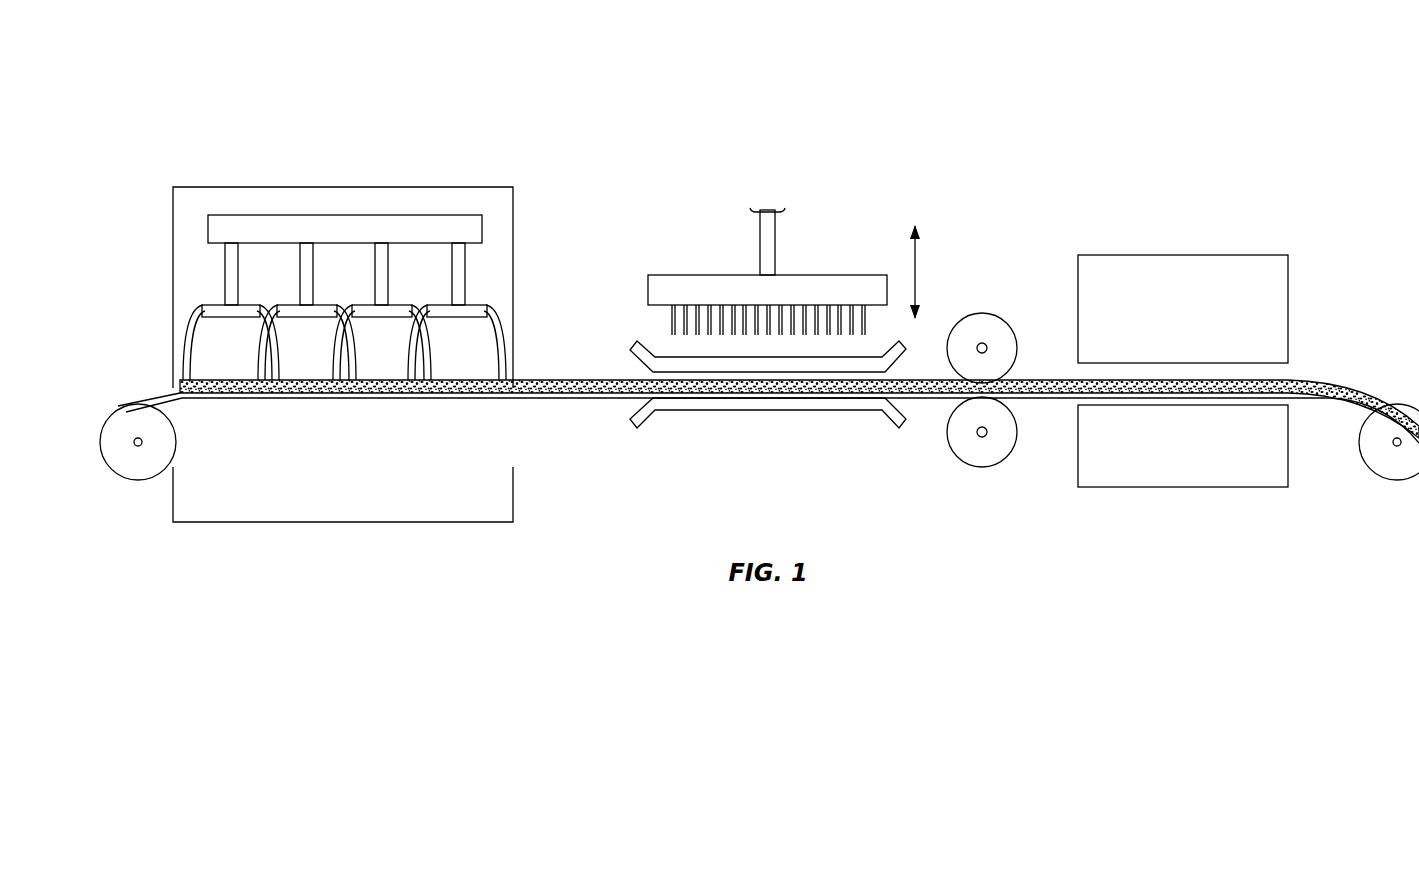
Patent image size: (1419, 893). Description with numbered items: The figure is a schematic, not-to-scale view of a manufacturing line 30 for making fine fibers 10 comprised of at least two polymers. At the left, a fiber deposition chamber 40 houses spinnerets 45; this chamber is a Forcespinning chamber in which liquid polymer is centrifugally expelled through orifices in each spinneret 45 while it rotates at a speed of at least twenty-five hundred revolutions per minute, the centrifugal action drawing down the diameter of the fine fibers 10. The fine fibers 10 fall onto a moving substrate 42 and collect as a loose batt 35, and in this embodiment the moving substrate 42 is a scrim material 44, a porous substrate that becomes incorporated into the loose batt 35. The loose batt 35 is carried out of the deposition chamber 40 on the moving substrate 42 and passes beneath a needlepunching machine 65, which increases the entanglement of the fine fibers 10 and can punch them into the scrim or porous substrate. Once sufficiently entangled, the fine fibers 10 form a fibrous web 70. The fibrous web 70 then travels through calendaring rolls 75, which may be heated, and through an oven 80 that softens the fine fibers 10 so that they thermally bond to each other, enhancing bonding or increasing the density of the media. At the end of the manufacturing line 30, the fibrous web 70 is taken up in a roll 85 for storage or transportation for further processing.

The manufacturing line 30 is at (246, 104).
The fiber deposition chamber 40 is at (368, 182).
The spinneret 45 is at (208, 303).
The fine fibers 10 is at (190, 336).
The moving substrate 42 is at (271, 404).
The scrim material 44 is at (388, 398).
The loose batt 35 is at (468, 396).
The needlepunching machine 65 is at (826, 220).
The fibrous web 70 is at (923, 396).
The calendaring rolls 75 is at (1000, 278).
The oven 80 is at (1178, 270).
The roll 85 is at (1393, 470).